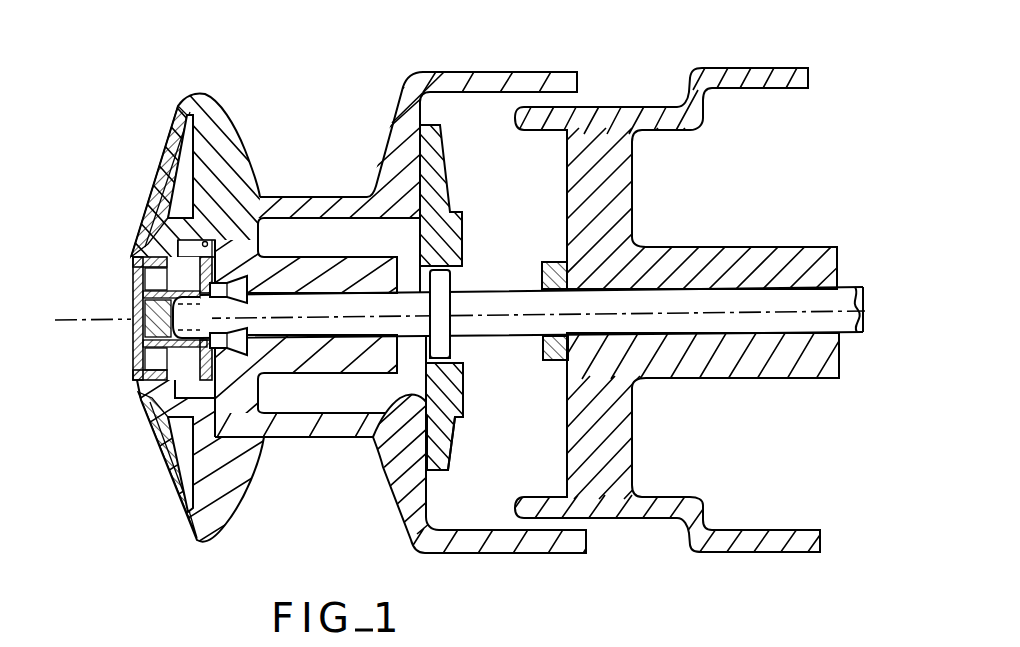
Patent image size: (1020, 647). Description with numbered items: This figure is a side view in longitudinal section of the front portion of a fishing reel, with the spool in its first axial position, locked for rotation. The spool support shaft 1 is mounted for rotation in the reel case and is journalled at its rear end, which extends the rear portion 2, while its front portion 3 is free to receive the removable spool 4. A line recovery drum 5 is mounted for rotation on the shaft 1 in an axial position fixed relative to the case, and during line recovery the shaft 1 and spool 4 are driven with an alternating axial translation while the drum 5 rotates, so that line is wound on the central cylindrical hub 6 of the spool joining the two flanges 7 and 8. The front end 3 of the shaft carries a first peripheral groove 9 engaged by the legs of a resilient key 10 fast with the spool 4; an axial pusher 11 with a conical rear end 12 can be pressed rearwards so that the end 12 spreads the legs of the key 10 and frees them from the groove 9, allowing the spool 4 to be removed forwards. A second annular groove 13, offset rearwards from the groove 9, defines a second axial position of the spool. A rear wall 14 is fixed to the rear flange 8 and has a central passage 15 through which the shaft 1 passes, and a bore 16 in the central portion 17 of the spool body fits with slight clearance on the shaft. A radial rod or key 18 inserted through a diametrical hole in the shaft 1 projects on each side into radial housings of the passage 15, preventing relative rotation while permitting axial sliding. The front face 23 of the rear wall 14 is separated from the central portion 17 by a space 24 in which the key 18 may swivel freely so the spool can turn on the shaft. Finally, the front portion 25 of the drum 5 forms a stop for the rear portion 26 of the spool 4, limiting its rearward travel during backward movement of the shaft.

The spool support shaft 1 is at (713, 303).
The rear portion 2 is at (843, 293).
The front portion 3 is at (137, 318).
The spool 4 is at (294, 170).
The line recovery drum 5 is at (646, 92).
The central cylindrical hub 6 is at (320, 207).
The flange 7 is at (180, 106).
The rear flange 8 is at (403, 112).
The first peripheral groove 9 is at (131, 338).
The resilient key 10 is at (138, 385).
The axial pusher 11 is at (133, 367).
The conical rear end 12 is at (131, 288).
The second annular groove 13 is at (220, 338).
The rear wall 14 is at (390, 242).
The central passage 15 is at (451, 279).
The bore 16 is at (315, 338).
The central portion 17 is at (297, 265).
The radial rod 18 is at (443, 350).
The front face 23 is at (374, 440).
The space 24 is at (437, 206).
The front portion 25 is at (537, 360).
The rear portion 26 is at (470, 397).